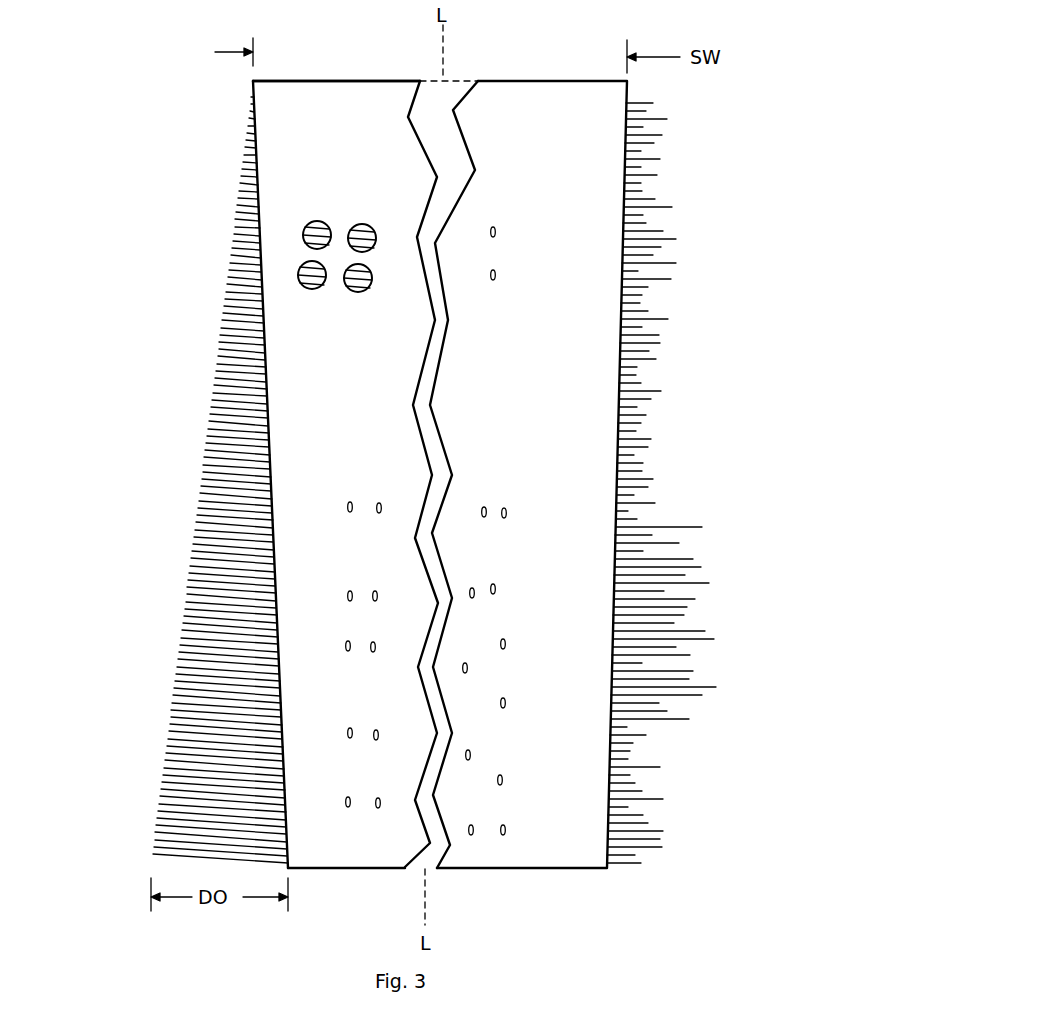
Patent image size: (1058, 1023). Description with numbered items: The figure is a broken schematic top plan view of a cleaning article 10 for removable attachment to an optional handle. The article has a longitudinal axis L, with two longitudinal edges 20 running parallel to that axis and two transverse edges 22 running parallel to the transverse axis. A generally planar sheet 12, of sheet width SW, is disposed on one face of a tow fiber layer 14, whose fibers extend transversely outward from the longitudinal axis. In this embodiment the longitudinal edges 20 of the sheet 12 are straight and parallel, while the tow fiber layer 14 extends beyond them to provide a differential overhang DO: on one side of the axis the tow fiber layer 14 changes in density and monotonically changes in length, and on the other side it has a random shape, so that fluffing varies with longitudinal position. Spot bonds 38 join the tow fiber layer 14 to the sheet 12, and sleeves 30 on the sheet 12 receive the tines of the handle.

The cleaning article 10 is at (719, 797).
The sheet 12 is at (366, 411).
The tow fiber layer 14 is at (237, 420).
The longitudinal edges 20 is at (240, 213).
The transverse edges 22 is at (357, 80).
The sleeves 30 is at (359, 822).
The bonds 38 is at (348, 507).